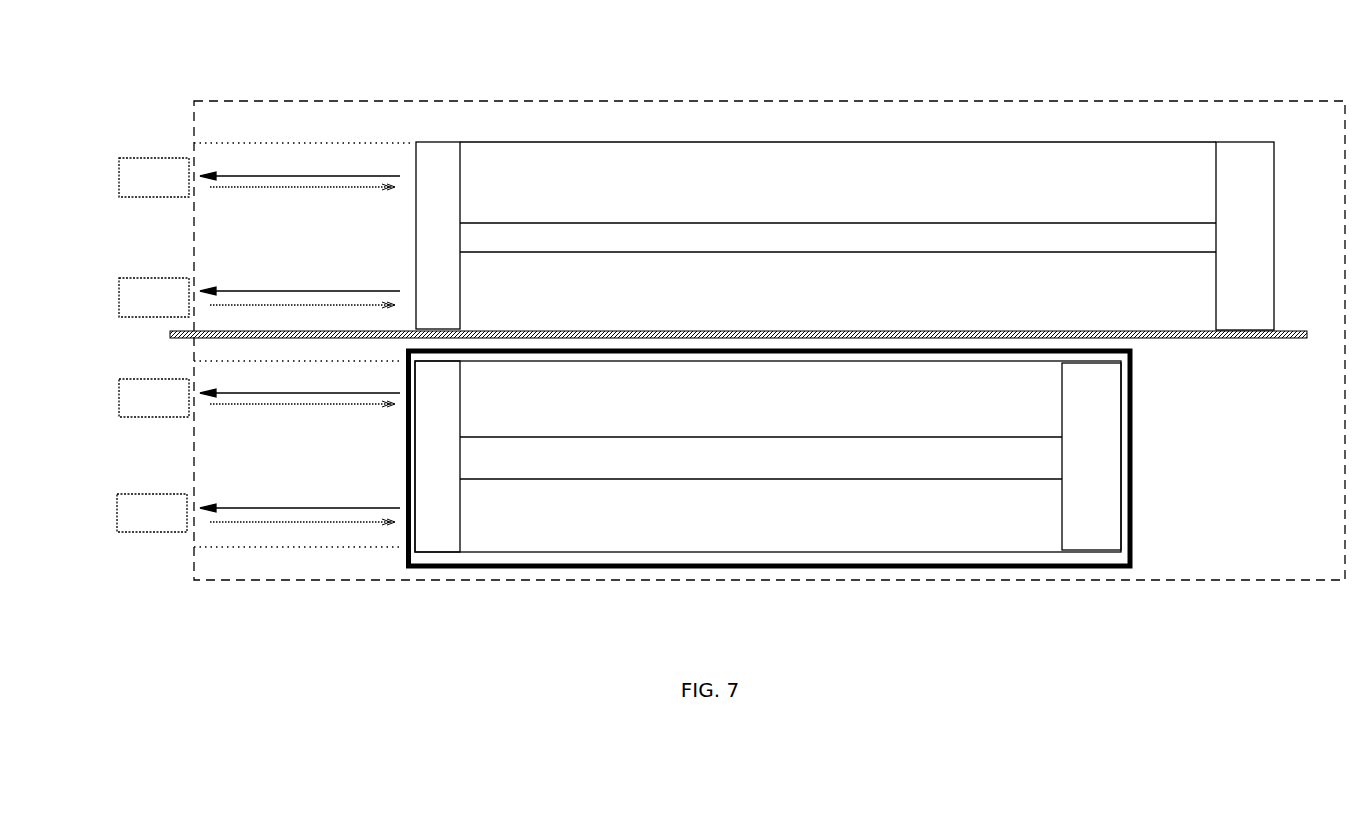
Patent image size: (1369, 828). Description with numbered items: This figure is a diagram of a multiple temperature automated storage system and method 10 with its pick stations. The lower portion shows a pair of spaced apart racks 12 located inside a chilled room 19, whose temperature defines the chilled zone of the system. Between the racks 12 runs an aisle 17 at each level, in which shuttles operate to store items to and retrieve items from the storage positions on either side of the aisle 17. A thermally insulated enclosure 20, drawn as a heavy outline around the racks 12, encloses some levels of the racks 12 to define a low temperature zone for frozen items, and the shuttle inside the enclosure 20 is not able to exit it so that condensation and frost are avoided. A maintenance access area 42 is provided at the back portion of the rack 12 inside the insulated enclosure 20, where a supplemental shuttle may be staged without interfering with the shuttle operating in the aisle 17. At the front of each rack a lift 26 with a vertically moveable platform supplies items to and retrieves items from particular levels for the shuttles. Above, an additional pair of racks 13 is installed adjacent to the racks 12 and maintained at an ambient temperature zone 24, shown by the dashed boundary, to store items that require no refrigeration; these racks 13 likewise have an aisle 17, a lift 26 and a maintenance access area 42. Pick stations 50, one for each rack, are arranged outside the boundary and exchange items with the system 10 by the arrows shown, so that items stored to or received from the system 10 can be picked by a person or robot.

The multiple temperature automated storage system and method 10 is at (1213, 448).
The rack 12 is at (620, 523).
The additional pair of racks 13 is at (650, 176).
The aisle 17 is at (1010, 235).
The chilled room 19 is at (1166, 567).
The thermally insulated enclosure 20 is at (499, 567).
The ambient temperature zone 24 is at (1181, 101).
The lift 26 is at (422, 250).
The maintenance access area 42 is at (1242, 215).
The pick station 50 is at (145, 180).